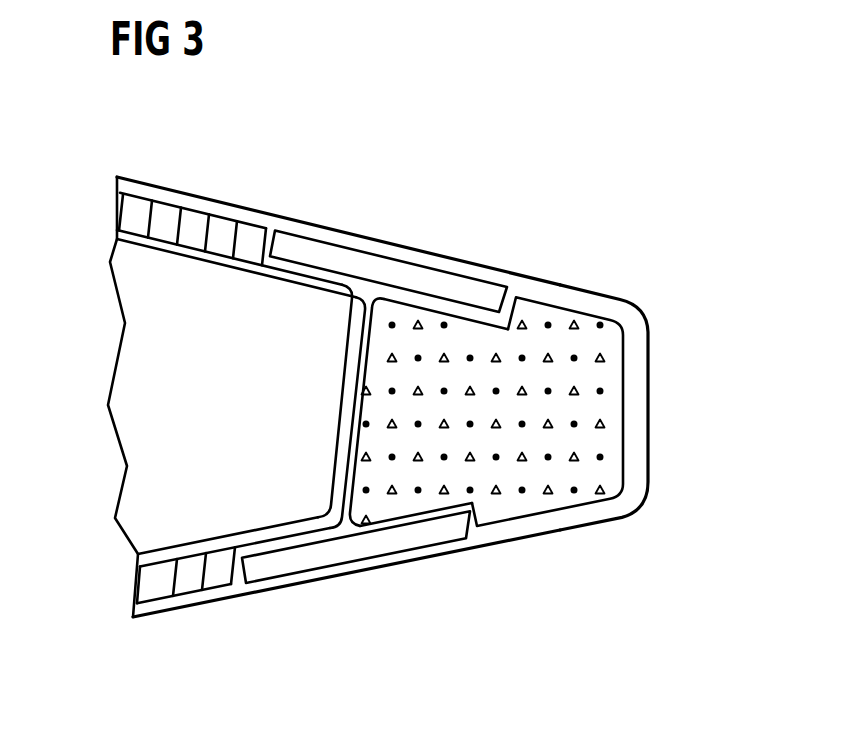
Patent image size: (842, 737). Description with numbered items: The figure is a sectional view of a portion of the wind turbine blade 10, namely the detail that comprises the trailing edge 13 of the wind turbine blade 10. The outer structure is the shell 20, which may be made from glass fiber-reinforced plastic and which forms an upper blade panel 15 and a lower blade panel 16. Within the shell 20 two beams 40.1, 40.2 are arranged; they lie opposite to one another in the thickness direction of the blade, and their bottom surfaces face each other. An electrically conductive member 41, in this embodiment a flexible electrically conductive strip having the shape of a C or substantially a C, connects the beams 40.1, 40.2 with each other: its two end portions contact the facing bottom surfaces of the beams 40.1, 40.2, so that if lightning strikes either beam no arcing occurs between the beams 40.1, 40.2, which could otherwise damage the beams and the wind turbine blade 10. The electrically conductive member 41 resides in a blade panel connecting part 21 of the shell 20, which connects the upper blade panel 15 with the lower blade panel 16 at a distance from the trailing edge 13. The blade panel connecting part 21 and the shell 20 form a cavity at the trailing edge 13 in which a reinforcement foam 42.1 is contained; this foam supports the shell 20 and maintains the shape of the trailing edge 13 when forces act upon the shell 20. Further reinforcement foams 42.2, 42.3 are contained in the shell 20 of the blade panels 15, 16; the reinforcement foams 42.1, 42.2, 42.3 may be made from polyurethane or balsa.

The wind turbine blade 10 is at (138, 164).
The trailing edge 13 is at (677, 465).
The upper blade panel 15 is at (346, 230).
The lower blade panel 16 is at (265, 595).
The shell 20 is at (570, 296).
The blade panel connecting part 21 is at (344, 382).
The beam 40.1 is at (442, 288).
The beam 40.2 is at (407, 540).
The electrically conductive member 41 is at (356, 430).
The reinforcement foam 42.1 is at (593, 408).
The reinforcement foam 42.2 is at (222, 234).
The reinforcement foam 42.3 is at (188, 585).